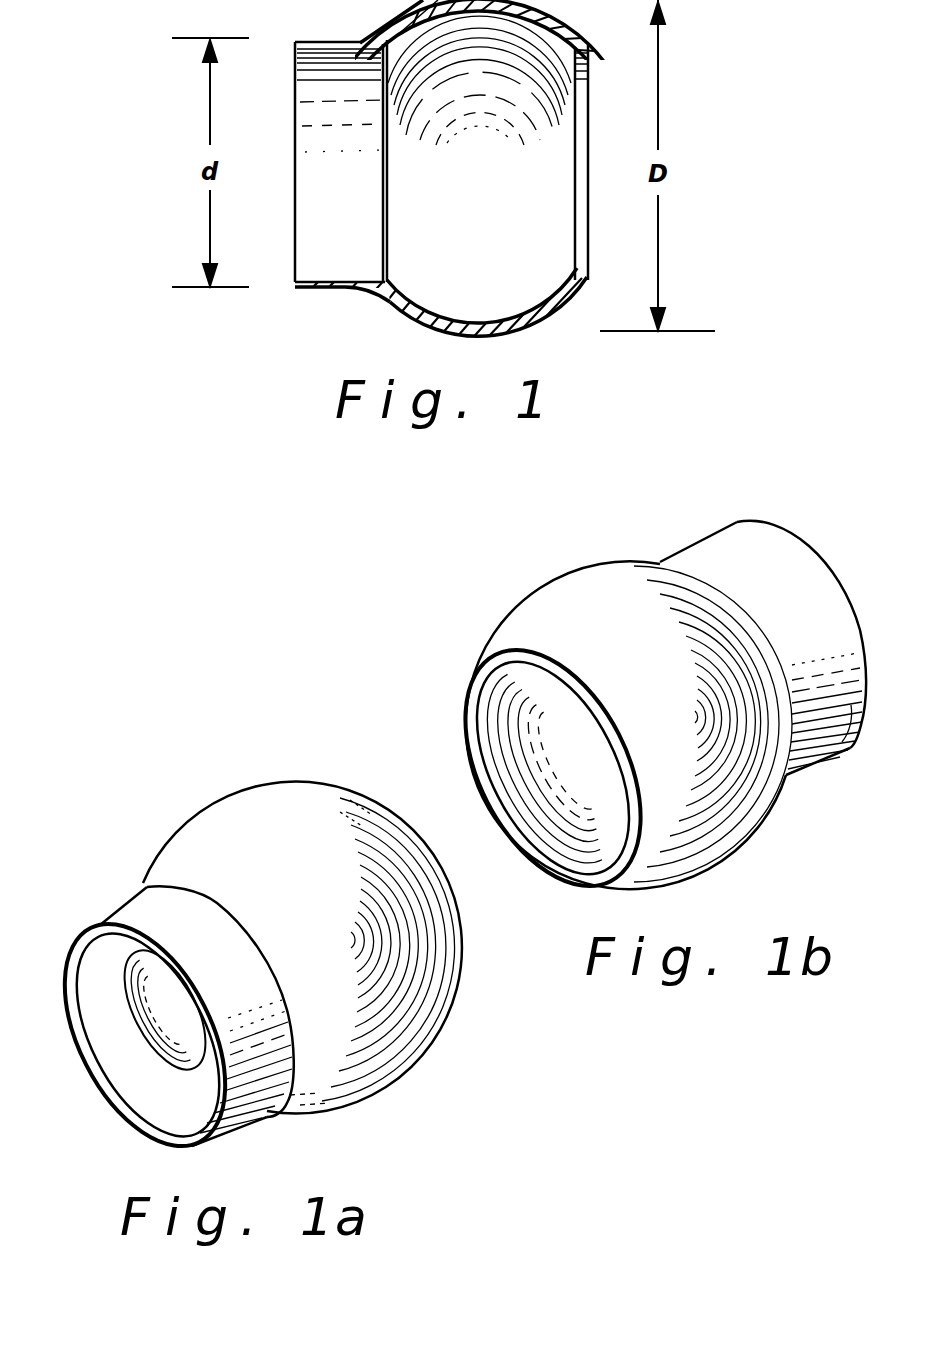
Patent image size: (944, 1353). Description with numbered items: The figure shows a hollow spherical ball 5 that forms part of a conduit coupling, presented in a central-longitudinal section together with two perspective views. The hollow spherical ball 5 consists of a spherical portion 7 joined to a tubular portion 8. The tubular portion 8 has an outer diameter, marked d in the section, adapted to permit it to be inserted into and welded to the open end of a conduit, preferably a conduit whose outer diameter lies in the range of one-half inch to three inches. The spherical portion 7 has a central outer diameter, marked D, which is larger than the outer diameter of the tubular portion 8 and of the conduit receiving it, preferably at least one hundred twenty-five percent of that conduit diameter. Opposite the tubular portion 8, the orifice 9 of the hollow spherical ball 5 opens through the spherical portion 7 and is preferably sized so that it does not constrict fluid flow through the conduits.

In FIG. 1, the hollow spherical ball 5 is at (472, 175).
In FIG. 1B, the hollow spherical ball 5 is at (476, 612).
In FIG. 1A, the hollow spherical ball 5 is at (448, 1047).
In FIG. 1, the spherical portion 7 is at (562, 303).
In FIG. 1A, the spherical portion 7 is at (313, 797).
In FIG. 1, the tubular portion 8 is at (323, 290).
In FIG. 1B, the tubular portion 8 is at (690, 553).
In FIG. 1A, the tubular portion 8 is at (147, 920).
In FIG. 1, the orifice 9 is at (584, 163).
In FIG. 1B, the orifice 9 is at (485, 776).